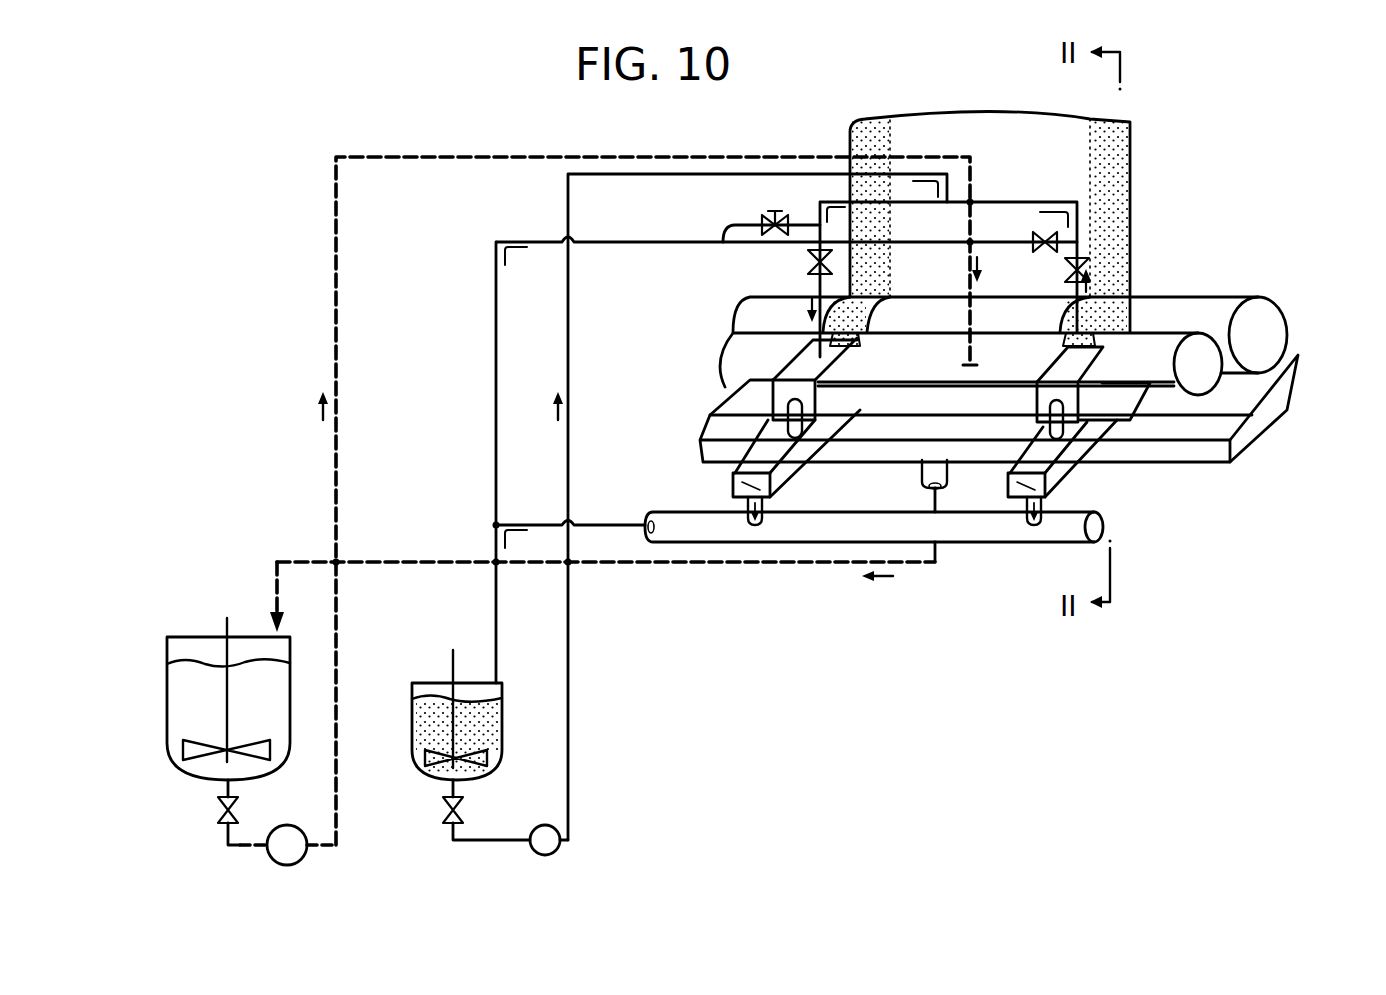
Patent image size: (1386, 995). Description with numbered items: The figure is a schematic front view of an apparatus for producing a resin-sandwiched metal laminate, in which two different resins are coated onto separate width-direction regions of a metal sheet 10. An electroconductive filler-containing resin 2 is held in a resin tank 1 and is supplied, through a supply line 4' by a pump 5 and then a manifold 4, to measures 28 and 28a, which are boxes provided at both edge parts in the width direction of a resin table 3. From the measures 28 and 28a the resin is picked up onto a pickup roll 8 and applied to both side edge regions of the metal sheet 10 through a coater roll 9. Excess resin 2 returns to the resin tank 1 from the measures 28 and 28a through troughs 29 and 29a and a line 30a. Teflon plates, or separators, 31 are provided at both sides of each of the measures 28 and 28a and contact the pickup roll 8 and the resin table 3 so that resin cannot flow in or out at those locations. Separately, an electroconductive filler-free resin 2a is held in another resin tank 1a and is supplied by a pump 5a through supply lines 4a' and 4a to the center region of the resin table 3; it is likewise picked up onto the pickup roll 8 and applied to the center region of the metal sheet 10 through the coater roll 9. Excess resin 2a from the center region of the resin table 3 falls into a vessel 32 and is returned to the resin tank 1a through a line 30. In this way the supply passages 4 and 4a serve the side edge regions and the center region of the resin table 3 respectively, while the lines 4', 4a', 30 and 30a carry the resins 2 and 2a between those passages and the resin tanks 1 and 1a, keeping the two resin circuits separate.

The resin tank 1 is at (500, 687).
The resin tank 1a is at (240, 640).
The electroconductive filler-containing resin 2 is at (492, 722).
The electroconductive filler-free resin 2a is at (200, 765).
The resin table 3 is at (1128, 405).
The manifold 4 is at (785, 379).
The supply line 4a is at (907, 216).
The supply line 4' is at (750, 507).
The supply line 4a' is at (608, 501).
The pump 5 is at (540, 856).
The pump 5a is at (296, 865).
The pickup roll 8 is at (1268, 400).
The coater roll 9 is at (1222, 301).
The metal sheet 10 is at (1037, 130).
The measure 28 is at (1090, 392).
The measure 28a is at (833, 390).
The trough 29 is at (1008, 476).
The trough 29a is at (733, 481).
The line 30 is at (803, 565).
The line 30a is at (1002, 531).
The Teflon plates (separators) 31 is at (760, 342).
The vessel 32 is at (1215, 447).